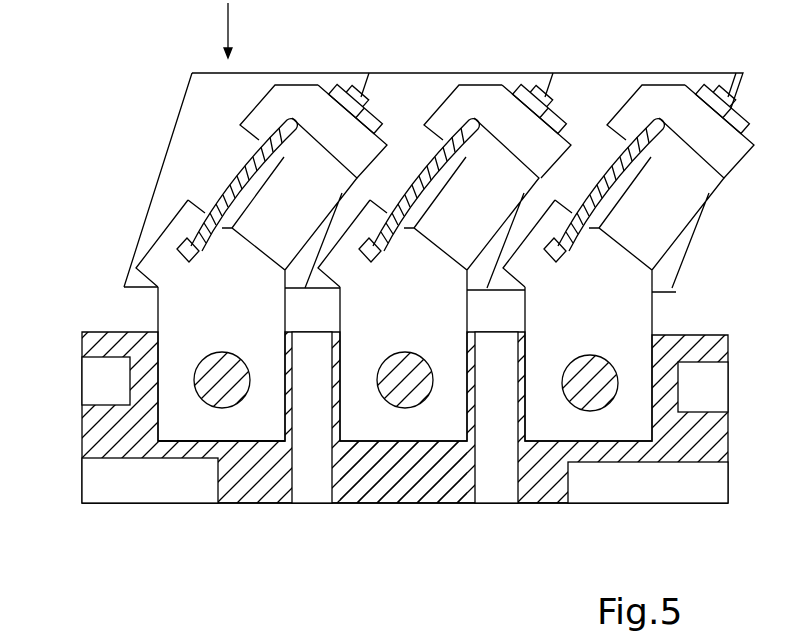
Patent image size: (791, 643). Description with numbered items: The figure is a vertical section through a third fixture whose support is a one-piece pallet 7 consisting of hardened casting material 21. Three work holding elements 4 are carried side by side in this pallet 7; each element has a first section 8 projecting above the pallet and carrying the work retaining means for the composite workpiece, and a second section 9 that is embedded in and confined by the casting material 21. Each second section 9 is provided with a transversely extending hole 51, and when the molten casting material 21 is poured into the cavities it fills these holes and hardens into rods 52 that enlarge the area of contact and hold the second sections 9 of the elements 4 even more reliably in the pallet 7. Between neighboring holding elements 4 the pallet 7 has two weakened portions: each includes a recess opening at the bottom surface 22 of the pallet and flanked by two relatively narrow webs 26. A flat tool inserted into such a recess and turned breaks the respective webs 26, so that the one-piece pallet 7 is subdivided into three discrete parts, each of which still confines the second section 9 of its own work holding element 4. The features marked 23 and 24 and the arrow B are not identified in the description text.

The work holding element 4 is at (152, 312).
The pallet 7 is at (717, 445).
The first section 8 is at (338, 192).
The second section 9 is at (208, 440).
The hardened casting material 21 is at (443, 478).
The bottom surface 22 is at (255, 507).
The bottom recess 23 is at (150, 482).
The side pocket 24 is at (97, 378).
The web 26 is at (313, 487).
The hole 51 is at (201, 346).
The rod 52 is at (235, 372).
The direction arrow B is at (382, 522).